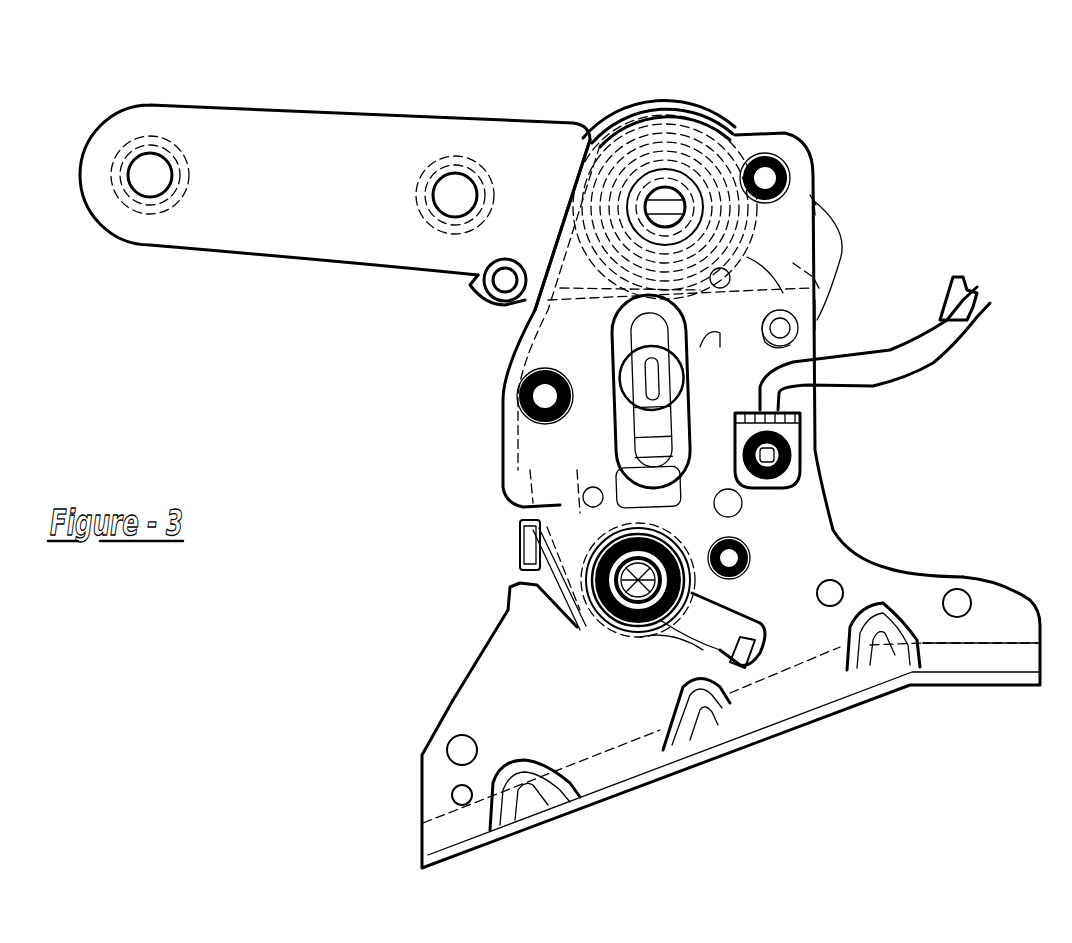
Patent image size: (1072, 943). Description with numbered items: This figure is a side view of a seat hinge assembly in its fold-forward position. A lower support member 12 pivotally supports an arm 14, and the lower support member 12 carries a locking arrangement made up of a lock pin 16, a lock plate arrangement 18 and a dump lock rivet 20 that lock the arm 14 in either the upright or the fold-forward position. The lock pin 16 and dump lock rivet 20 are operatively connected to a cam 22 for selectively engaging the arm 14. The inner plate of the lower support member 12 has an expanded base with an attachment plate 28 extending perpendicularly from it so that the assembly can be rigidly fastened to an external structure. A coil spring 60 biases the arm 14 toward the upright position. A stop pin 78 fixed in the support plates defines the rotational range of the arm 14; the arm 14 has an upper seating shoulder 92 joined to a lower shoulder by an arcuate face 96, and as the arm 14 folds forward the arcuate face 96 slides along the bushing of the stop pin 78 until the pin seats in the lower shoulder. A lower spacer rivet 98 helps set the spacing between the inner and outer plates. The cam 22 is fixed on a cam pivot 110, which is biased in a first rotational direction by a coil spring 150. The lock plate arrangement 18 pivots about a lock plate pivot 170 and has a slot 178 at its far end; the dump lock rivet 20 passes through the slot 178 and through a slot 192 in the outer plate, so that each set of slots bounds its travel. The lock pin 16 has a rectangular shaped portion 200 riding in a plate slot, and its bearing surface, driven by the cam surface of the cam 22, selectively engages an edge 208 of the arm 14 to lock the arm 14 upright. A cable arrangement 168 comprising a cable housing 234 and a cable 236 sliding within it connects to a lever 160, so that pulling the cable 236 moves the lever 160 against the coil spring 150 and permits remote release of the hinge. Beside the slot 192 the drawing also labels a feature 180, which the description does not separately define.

The lower support member 12 is at (817, 452).
The arm 14 is at (318, 135).
The lock pin 16 is at (618, 370).
The lock plate arrangement 18 is at (790, 273).
The dump lock rivet 20 is at (820, 317).
The cam 22 is at (573, 507).
The attachment plate 28 is at (800, 713).
The coil spring 60 is at (730, 115).
The stop pin 78 is at (782, 143).
The upper seating shoulder 92 is at (597, 132).
The arcuate face 96 is at (668, 128).
The lower spacer rivet 98 is at (815, 200).
The cam pivot 110 is at (587, 650).
The coil spring 150 is at (580, 627).
The lever 160 is at (690, 662).
The cable arrangement 168 is at (877, 383).
The lock plate pivot 170 is at (520, 402).
The slot 178 is at (790, 348).
The cable bracket 180 is at (745, 493).
The slot 192 is at (767, 455).
The rectangular shaped portion 200 is at (813, 197).
The edge 208 is at (828, 215).
The cable housing 234 is at (960, 318).
The cable 236 is at (750, 558).